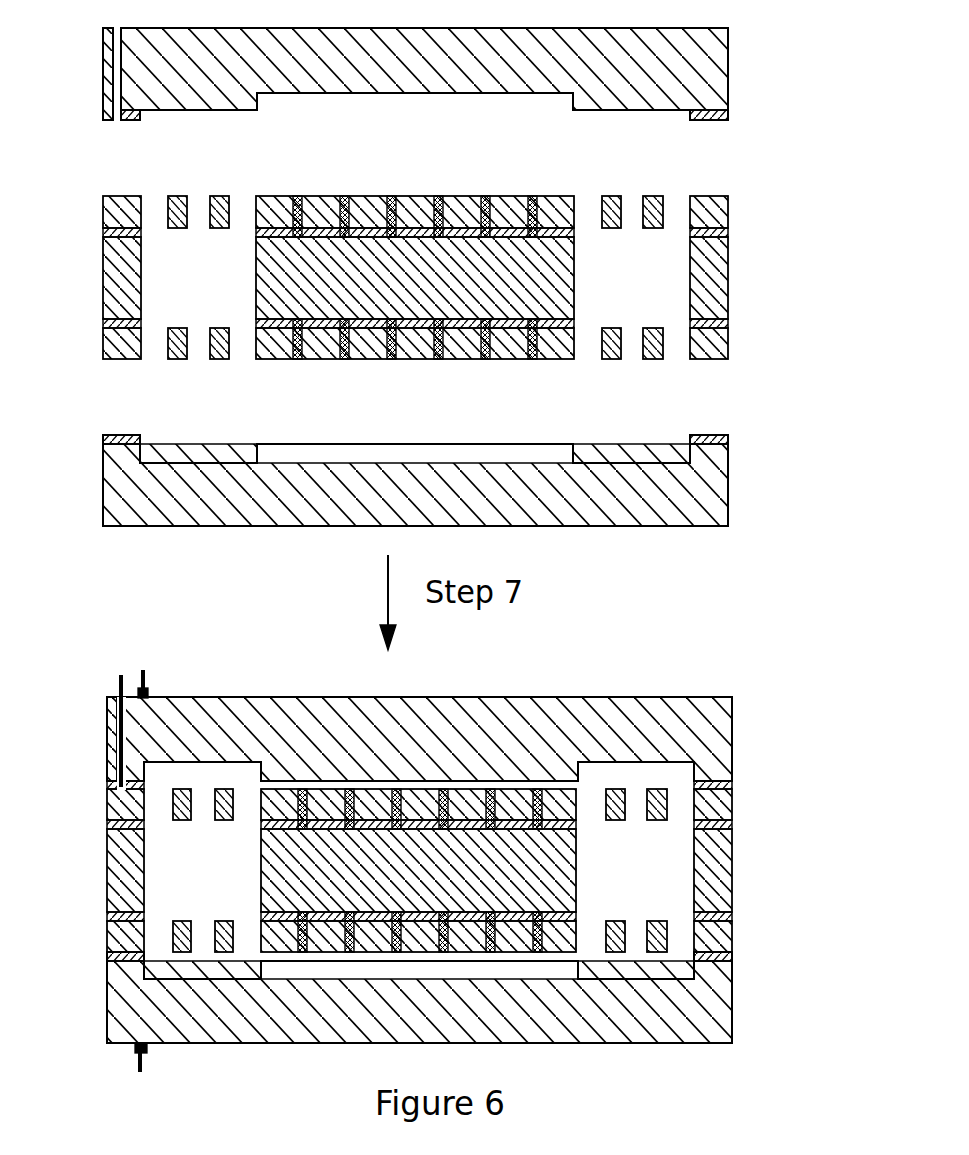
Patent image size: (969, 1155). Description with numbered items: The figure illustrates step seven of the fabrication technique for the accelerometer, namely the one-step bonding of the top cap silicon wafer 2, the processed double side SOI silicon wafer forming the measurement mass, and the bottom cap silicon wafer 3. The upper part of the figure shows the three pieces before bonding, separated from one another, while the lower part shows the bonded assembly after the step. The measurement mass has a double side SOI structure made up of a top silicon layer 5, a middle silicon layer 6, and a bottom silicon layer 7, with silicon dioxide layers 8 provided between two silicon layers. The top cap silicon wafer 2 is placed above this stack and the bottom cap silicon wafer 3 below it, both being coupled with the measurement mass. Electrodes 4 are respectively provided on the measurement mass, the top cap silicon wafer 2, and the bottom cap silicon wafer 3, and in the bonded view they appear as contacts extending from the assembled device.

The top cap silicon wafer 2 is at (705, 75).
The bottom cap silicon wafer 3 is at (703, 500).
The electrodes 4 is at (120, 698).
The top silicon layer 5 is at (724, 213).
The middle silicon layer 6 is at (712, 288).
The bottom silicon layer 7 is at (716, 340).
The silicon dioxide layers 8 is at (723, 233).